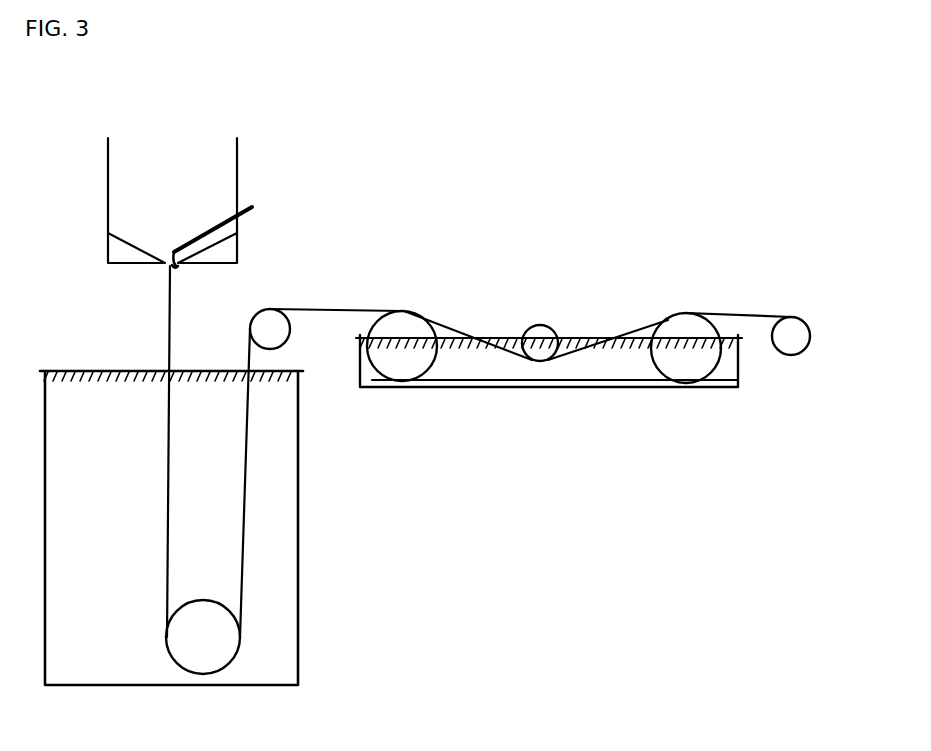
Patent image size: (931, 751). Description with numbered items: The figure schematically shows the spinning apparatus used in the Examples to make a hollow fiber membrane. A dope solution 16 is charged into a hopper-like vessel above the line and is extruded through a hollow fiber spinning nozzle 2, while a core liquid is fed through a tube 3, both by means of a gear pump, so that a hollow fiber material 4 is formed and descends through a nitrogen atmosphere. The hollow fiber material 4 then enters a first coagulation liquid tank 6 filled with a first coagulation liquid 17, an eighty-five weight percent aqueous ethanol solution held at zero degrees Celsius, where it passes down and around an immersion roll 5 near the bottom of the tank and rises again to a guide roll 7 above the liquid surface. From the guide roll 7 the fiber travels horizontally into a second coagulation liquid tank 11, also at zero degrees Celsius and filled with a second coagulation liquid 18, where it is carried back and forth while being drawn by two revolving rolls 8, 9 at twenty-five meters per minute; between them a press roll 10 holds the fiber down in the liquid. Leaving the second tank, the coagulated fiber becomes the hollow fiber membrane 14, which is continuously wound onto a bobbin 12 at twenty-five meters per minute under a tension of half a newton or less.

The hollow fiber spinning nozzle 2 is at (184, 269).
The tube 3 is at (172, 243).
The hollow fiber material 4 is at (171, 337).
The immersion roll 5 is at (212, 650).
The first coagulation liquid tank 6 is at (299, 512).
The guide roll 7 is at (291, 330).
The revolving roll 8 is at (402, 322).
The revolving roll 9 is at (686, 321).
The press roll 10 is at (542, 330).
The second coagulation liquid tank 11 is at (465, 390).
The bobbin 12 is at (806, 328).
The hollow fiber membrane 14 is at (754, 313).
The dope solution 16 is at (180, 191).
The first coagulation liquid 17 is at (120, 526).
The second coagulation liquid 18 is at (614, 369).